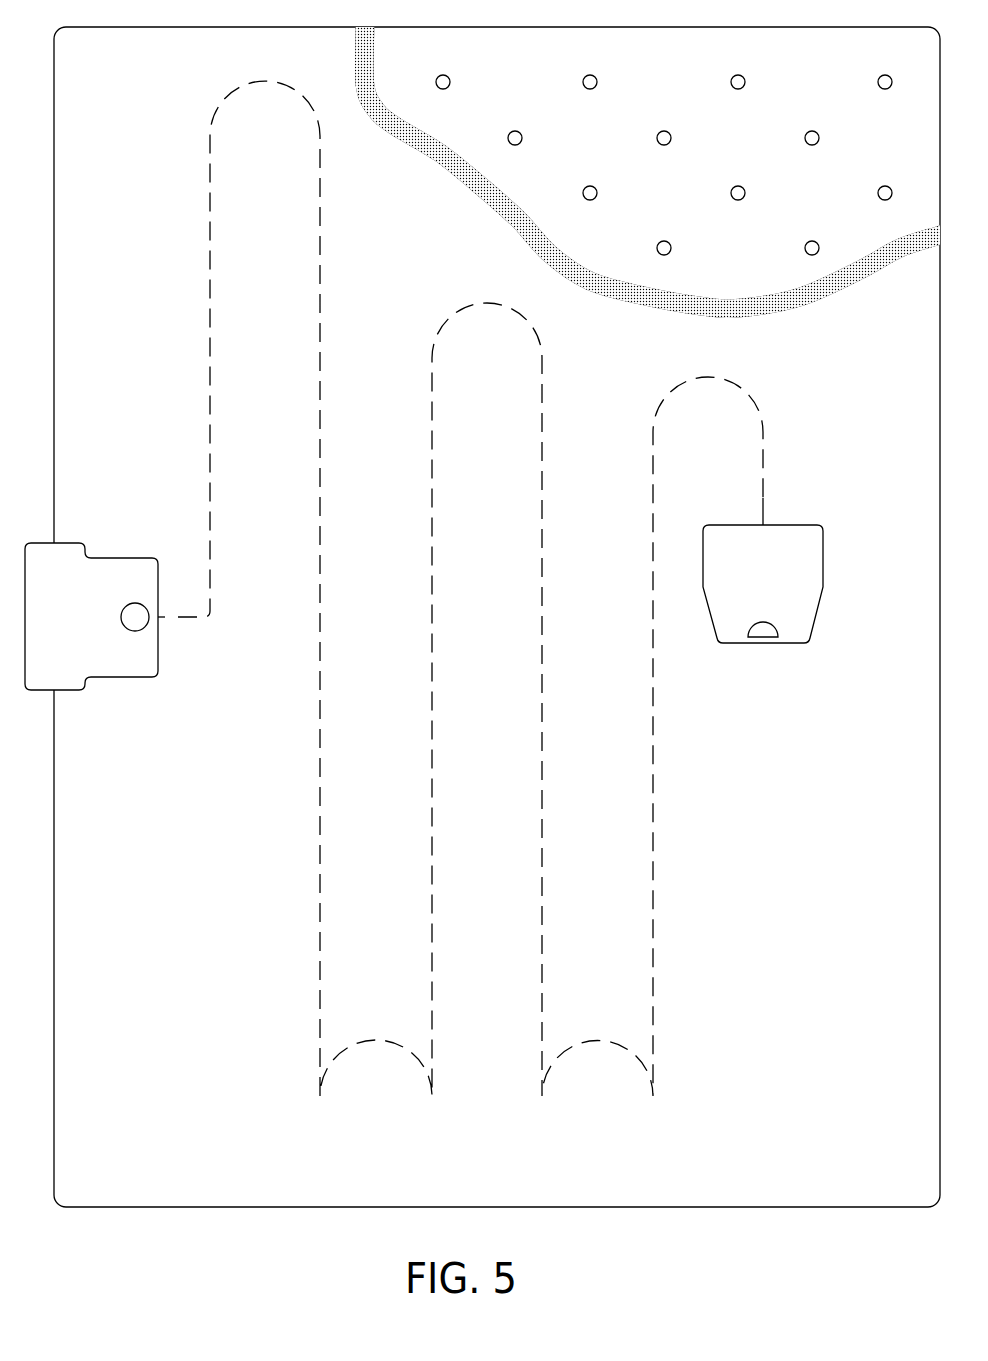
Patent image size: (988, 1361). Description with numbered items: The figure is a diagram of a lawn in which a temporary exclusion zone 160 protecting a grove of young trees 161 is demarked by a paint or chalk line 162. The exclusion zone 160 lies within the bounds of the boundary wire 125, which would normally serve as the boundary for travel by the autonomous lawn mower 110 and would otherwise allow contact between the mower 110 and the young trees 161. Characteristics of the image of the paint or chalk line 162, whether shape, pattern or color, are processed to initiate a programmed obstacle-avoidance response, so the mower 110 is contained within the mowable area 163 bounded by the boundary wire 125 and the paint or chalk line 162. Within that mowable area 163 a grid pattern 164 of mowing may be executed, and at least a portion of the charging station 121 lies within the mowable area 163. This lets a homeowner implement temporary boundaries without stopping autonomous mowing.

The autonomous lawn mower 110 is at (823, 553).
The charging station 121 is at (120, 677).
The boundary wire 125 is at (55, 441).
The temporary exclusion zone 160 is at (758, 270).
The young trees 161 is at (671, 136).
The paint or chalk line 162 is at (466, 186).
The mowable area 163 is at (142, 101).
The grid pattern 164 is at (320, 771).